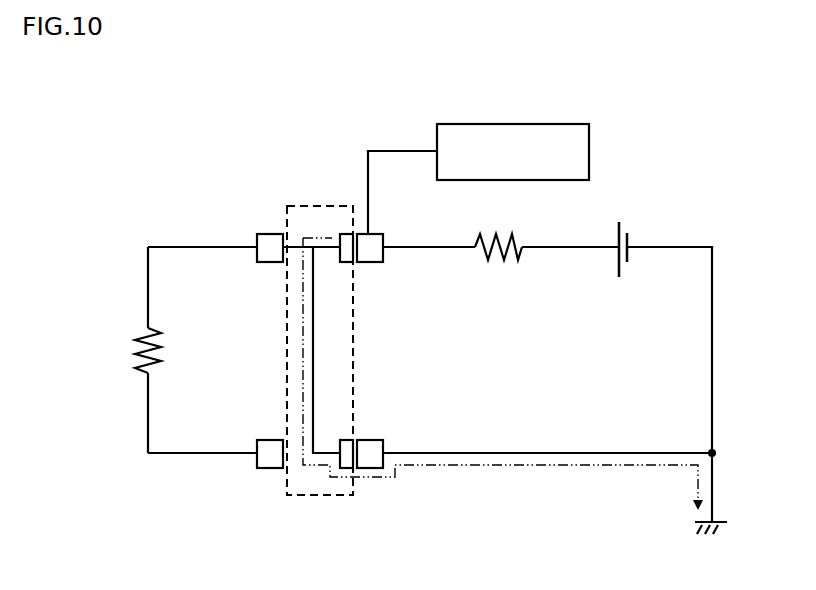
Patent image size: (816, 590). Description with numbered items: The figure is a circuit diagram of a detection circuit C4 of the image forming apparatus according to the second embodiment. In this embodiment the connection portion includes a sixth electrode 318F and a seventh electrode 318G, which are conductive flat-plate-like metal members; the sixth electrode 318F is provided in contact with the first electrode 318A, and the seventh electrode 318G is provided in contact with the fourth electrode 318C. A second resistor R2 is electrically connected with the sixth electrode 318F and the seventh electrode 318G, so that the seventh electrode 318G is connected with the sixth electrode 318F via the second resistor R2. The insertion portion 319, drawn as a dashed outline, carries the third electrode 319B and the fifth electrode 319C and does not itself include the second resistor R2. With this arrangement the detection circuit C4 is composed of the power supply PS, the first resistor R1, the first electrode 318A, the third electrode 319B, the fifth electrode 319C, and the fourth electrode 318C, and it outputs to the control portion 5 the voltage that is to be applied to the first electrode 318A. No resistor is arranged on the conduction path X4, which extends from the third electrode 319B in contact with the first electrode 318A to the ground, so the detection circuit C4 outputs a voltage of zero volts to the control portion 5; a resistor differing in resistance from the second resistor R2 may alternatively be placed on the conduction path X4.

The control portion 5 is at (589, 148).
The detection circuit C4 is at (666, 110).
The insertion portion 319 is at (326, 206).
The third electrode 319B is at (346, 262).
The fifth electrode 319C is at (348, 440).
The first electrode 318A is at (383, 262).
The fourth electrode 318C is at (383, 446).
The sixth electrode 318F is at (257, 260).
The seventh electrode 318G is at (257, 446).
The first resistor R1 is at (522, 250).
The second resistor R2 is at (137, 372).
The power supply PS is at (628, 255).
The conduction path X4 is at (532, 468).